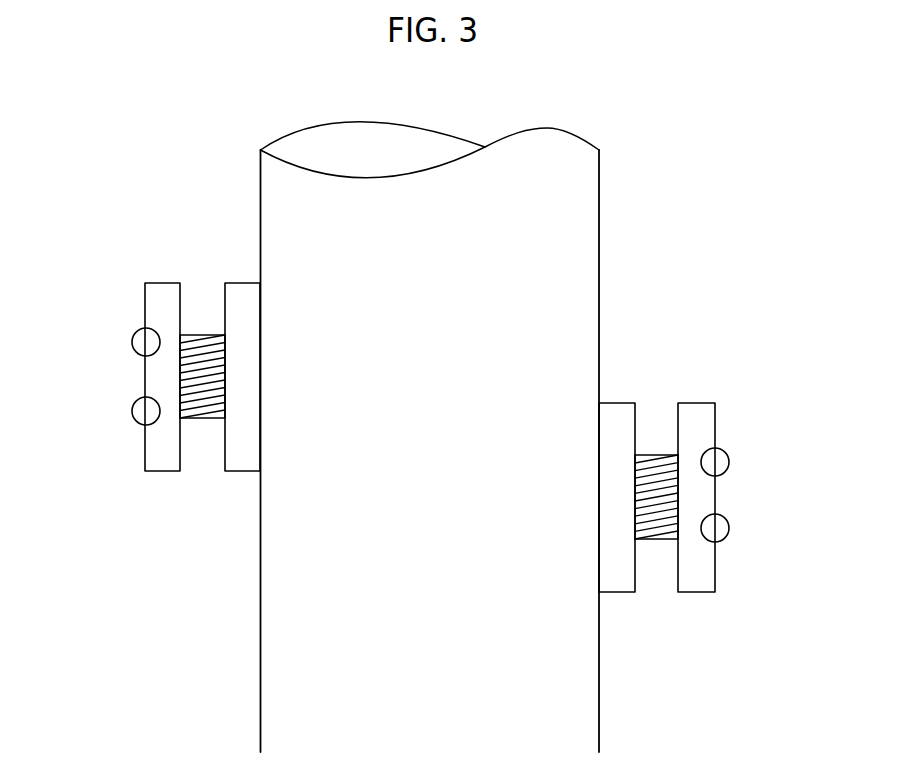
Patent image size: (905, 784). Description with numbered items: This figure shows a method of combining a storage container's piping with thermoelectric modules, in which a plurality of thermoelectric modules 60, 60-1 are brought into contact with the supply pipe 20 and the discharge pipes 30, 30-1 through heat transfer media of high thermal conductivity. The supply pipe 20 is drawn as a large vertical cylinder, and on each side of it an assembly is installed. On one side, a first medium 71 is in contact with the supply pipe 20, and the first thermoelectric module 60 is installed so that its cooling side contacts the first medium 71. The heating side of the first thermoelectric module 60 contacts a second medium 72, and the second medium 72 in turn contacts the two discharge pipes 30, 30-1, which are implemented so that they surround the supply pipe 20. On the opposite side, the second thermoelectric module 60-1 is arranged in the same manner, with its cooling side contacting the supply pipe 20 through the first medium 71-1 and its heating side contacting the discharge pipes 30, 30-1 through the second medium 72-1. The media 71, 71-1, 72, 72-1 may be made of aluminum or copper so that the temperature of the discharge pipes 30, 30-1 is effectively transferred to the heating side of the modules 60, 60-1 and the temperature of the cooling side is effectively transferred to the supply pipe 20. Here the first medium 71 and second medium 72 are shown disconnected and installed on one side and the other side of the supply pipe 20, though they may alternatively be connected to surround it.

The supply pipe 20 is at (599, 150).
The discharge pipe 30 is at (133, 340).
The discharge pipe 30-1 is at (133, 412).
The first thermoelectric module 60 is at (662, 539).
The second thermoelectric module 60-1 is at (212, 419).
The first medium 71 is at (626, 403).
The first medium 71-1 is at (242, 283).
The second medium 72 is at (706, 403).
The second medium 72-1 is at (148, 283).